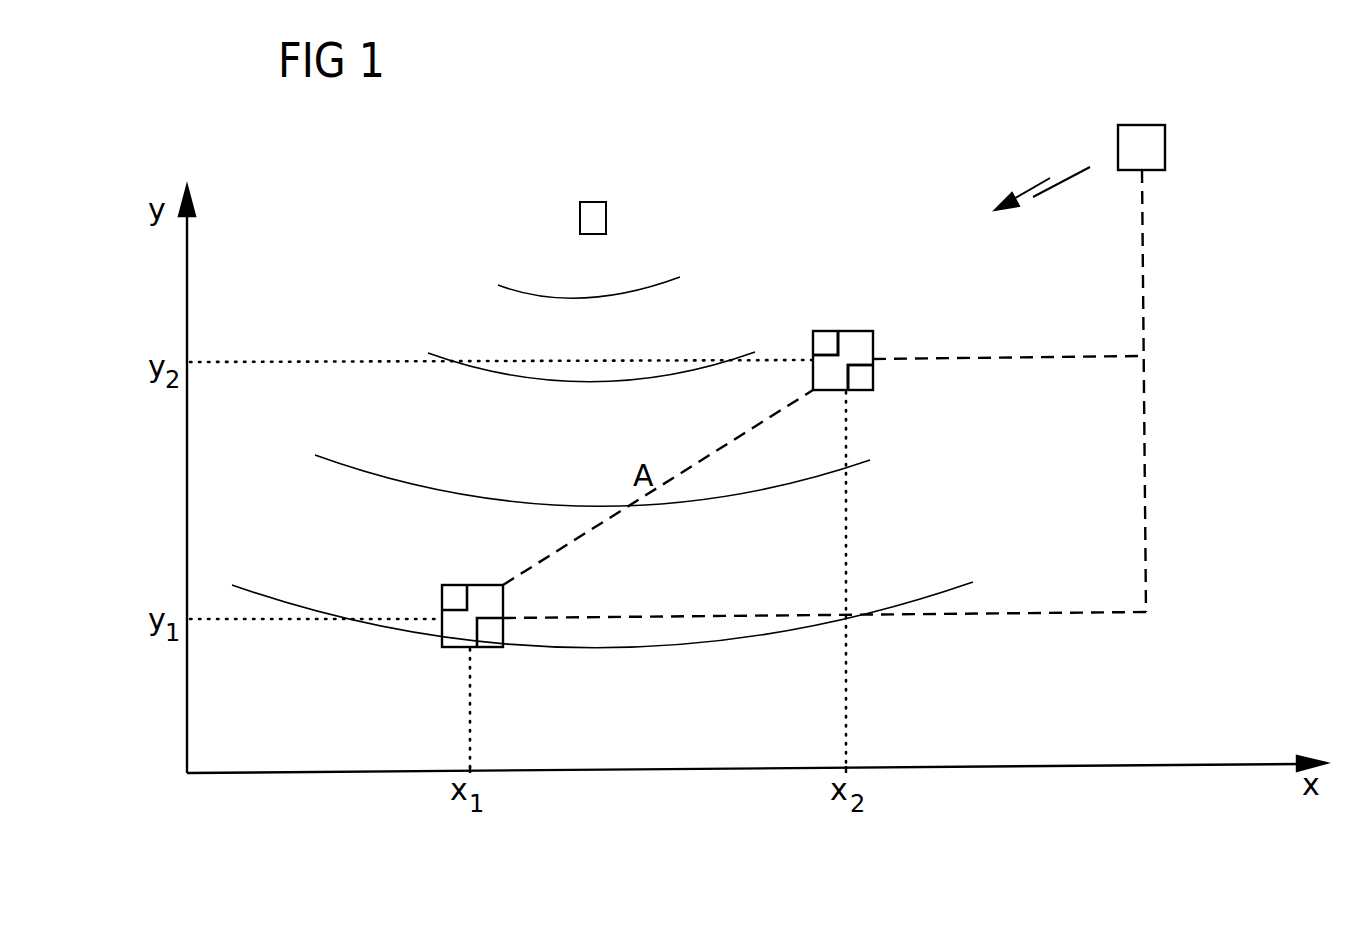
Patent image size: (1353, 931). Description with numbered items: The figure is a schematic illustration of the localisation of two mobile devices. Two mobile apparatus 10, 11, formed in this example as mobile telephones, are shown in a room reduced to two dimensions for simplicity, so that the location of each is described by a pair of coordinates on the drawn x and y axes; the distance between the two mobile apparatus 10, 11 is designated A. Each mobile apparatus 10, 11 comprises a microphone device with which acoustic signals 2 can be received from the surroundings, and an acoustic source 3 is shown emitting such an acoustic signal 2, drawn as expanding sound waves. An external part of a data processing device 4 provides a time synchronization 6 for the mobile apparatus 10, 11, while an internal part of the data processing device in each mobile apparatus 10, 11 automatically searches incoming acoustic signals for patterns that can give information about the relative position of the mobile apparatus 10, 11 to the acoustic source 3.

The acoustic signal 2 is at (657, 288).
The acoustic source 3 is at (592, 213).
The external part of data processing device 4 is at (1150, 147).
The time synchronization 6 is at (1042, 179).
The mobile apparatus 10 is at (488, 603).
The mobile apparatus 11 is at (855, 342).